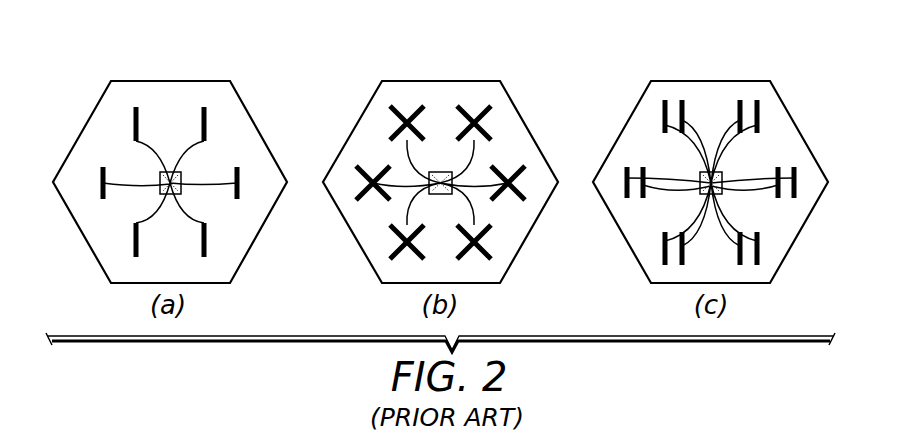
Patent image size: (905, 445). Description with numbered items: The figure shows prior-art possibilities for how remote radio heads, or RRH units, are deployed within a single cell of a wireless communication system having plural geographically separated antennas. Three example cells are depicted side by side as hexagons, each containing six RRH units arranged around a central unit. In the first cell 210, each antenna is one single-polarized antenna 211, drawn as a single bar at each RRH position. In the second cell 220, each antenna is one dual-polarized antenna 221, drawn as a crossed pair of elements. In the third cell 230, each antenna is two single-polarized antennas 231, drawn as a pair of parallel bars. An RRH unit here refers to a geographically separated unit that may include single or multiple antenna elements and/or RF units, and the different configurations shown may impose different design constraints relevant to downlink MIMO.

The cell 210 is at (159, 155).
The single-polarized antenna 211 is at (132, 123).
The cell 220 is at (424, 155).
The dual-polarized antenna 221 is at (390, 125).
The cell 230 is at (700, 155).
The two single-polarized antennas 231 is at (662, 120).